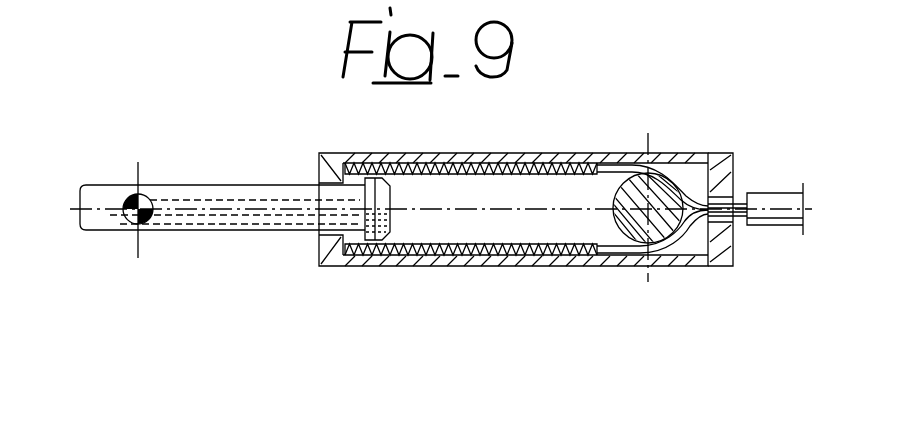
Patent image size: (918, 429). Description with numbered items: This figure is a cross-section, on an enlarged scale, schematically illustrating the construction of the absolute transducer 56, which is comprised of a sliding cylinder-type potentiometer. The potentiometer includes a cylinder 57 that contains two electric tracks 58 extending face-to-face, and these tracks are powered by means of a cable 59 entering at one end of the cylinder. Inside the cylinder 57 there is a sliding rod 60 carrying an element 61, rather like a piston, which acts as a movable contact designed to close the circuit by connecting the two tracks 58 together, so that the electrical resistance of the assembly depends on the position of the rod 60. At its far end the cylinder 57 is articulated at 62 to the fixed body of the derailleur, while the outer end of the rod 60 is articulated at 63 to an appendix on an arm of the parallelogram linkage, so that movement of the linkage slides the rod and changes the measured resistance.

The absolute transducer 56 is at (532, 284).
The cylinder 57 is at (716, 268).
The electric tracks 58 is at (488, 244).
The cable 59 is at (772, 197).
The sliding rod 60 is at (220, 220).
The element 61 is at (367, 206).
The articulation of the cylinder 62 is at (667, 201).
The articulation of the rod 63 is at (134, 225).